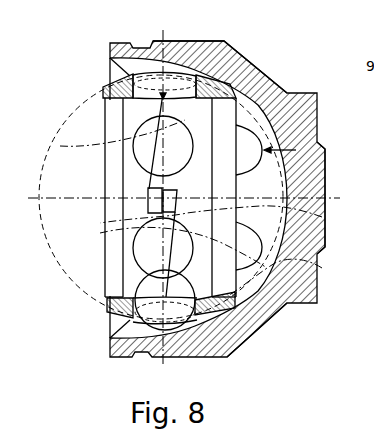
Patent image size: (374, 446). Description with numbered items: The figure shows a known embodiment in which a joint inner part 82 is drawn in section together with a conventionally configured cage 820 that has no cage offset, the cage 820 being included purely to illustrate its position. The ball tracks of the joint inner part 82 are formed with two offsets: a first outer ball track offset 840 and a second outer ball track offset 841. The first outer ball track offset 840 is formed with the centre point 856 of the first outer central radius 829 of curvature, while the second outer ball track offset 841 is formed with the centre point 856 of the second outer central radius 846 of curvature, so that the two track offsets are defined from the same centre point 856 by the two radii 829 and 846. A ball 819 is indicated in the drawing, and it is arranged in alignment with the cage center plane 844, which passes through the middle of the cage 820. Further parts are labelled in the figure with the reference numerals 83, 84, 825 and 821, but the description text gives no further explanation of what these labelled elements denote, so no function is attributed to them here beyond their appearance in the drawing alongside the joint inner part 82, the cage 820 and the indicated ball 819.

The joint inner part 82 is at (250, 59).
The cage 820 is at (232, 58).
The shoulder of outer joint part 83 is at (298, 142).
The ball 819 is at (232, 355).
The cage 84 is at (95, 70).
The cage window 825 is at (179, 76).
The second outer ball track offset 841 is at (178, 194).
The first outer ball track offset 840 is at (162, 212).
The cage center plane 844 is at (166, 358).
The spherical surface 821 is at (68, 118).
The first outer central radius of curvature 829 is at (60, 146).
The centre point 856 is at (148, 190).
The second outer central radius of curvature 846 is at (322, 268).